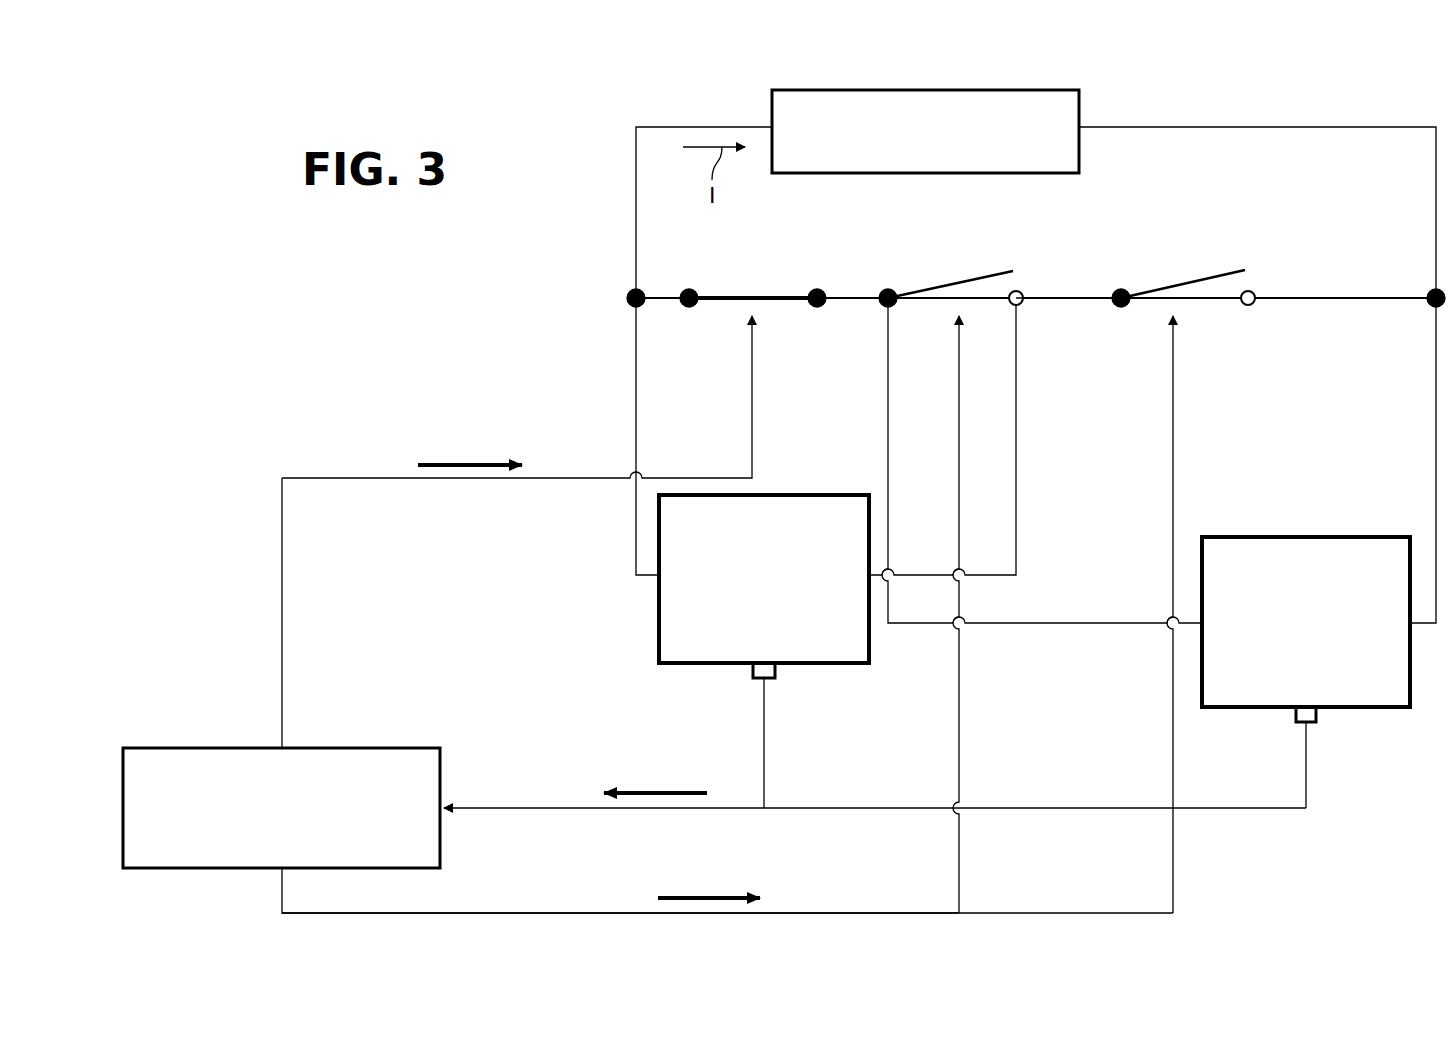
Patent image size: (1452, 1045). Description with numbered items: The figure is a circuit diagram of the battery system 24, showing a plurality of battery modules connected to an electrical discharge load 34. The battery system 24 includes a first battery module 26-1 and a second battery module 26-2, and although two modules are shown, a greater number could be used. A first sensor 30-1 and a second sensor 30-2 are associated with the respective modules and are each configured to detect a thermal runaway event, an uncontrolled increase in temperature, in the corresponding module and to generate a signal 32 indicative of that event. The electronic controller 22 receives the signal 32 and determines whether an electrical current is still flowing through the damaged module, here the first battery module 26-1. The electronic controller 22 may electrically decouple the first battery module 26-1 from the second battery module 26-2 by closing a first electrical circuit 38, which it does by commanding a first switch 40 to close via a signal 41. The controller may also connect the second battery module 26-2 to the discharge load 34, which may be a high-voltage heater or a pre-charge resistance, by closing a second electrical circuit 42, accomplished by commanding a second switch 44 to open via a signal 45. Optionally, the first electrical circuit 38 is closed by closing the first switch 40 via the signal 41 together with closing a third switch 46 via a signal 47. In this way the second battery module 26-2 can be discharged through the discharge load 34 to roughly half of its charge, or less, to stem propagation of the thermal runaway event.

The electronic controller 22 is at (378, 748).
The battery system 24 is at (1250, 862).
The first battery module 26-1 is at (764, 579).
The second battery module 26-2 is at (1306, 622).
The first sensor 30-1 is at (752, 668).
The second sensor 30-2 is at (1318, 710).
The signal 32 is at (657, 792).
The discharge load 34 is at (1043, 90).
The first electrical circuit 38 is at (840, 322).
The first switch 40 is at (757, 297).
The signal 41 is at (470, 463).
The second electrical circuit 42 is at (1078, 322).
The second switch 44 is at (985, 275).
The signal 45 is at (708, 898).
The third switch 46 is at (1211, 275).
The signal 47 is at (736, 877).